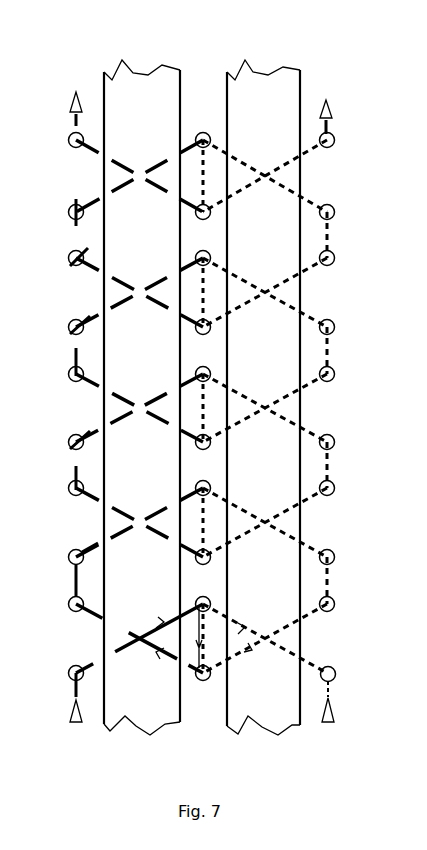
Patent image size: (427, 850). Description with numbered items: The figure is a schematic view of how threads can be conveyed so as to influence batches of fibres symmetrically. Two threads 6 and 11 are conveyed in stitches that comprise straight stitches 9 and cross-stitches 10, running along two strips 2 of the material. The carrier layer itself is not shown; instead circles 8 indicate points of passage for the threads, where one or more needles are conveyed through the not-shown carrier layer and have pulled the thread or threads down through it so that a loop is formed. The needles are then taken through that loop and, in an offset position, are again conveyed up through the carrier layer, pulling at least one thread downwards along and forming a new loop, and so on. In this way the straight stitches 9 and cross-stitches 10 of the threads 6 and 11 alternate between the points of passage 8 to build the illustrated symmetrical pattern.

The fabric strips 2 is at (247, 102).
The thread 6 is at (72, 693).
The circles 8 is at (196, 492).
The straight stitches 9 is at (70, 352).
The cross-stitches 10 is at (95, 308).
The thread 11 is at (331, 686).